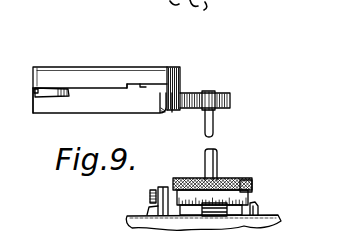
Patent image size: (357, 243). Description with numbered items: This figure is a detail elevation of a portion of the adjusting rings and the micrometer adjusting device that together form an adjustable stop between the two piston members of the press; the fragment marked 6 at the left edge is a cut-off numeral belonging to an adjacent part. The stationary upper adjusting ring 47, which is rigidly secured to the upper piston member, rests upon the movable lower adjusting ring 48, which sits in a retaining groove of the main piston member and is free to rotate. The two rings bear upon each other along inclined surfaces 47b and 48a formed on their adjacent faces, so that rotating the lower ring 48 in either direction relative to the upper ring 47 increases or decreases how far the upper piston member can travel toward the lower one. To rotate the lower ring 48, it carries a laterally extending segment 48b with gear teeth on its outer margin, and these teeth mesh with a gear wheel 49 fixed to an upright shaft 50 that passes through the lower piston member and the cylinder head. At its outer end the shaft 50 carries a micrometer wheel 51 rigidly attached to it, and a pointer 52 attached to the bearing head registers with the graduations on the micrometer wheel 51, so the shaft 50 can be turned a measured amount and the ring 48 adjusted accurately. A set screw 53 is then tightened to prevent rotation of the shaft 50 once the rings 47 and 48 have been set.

The partial numeral (cut off at sheet edge) 6 is at (5, 54).
The upper adjusting ring 47 is at (147, 73).
The inclined surfaces 47b is at (139, 94).
The lower adjusting ring 48 is at (50, 113).
The inclined surfaces 48a is at (53, 88).
The laterally extending segment 48b is at (194, 135).
The gear wheel 49 is at (230, 96).
The upright shaft 50 is at (216, 166).
The micrometer wheel 51 is at (188, 180).
The pointer 52 is at (270, 203).
The set screw 53 is at (150, 197).